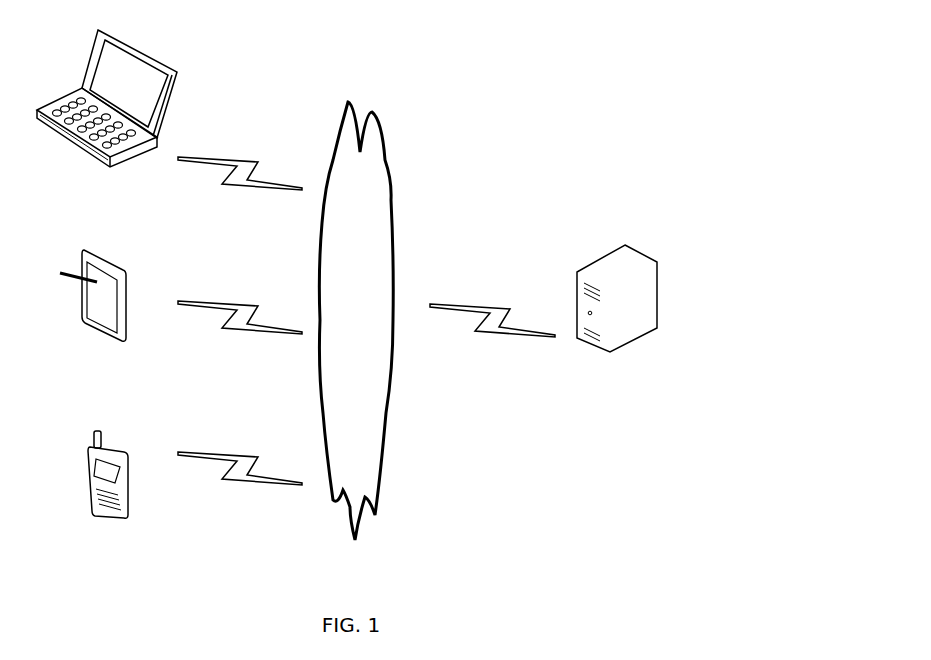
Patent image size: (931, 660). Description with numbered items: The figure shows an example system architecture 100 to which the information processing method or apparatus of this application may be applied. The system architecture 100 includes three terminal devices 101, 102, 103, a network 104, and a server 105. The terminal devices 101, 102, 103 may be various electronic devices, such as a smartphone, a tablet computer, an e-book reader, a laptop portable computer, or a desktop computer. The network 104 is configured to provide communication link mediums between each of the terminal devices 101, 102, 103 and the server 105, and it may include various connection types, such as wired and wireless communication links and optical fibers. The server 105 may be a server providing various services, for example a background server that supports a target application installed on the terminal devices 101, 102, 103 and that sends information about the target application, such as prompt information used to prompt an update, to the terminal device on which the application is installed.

The system architecture 100 is at (580, 32).
The terminal device 101 is at (107, 497).
The terminal device 102 is at (93, 317).
The terminal device 103 is at (107, 121).
The network 104 is at (356, 321).
The server 105 is at (617, 320).